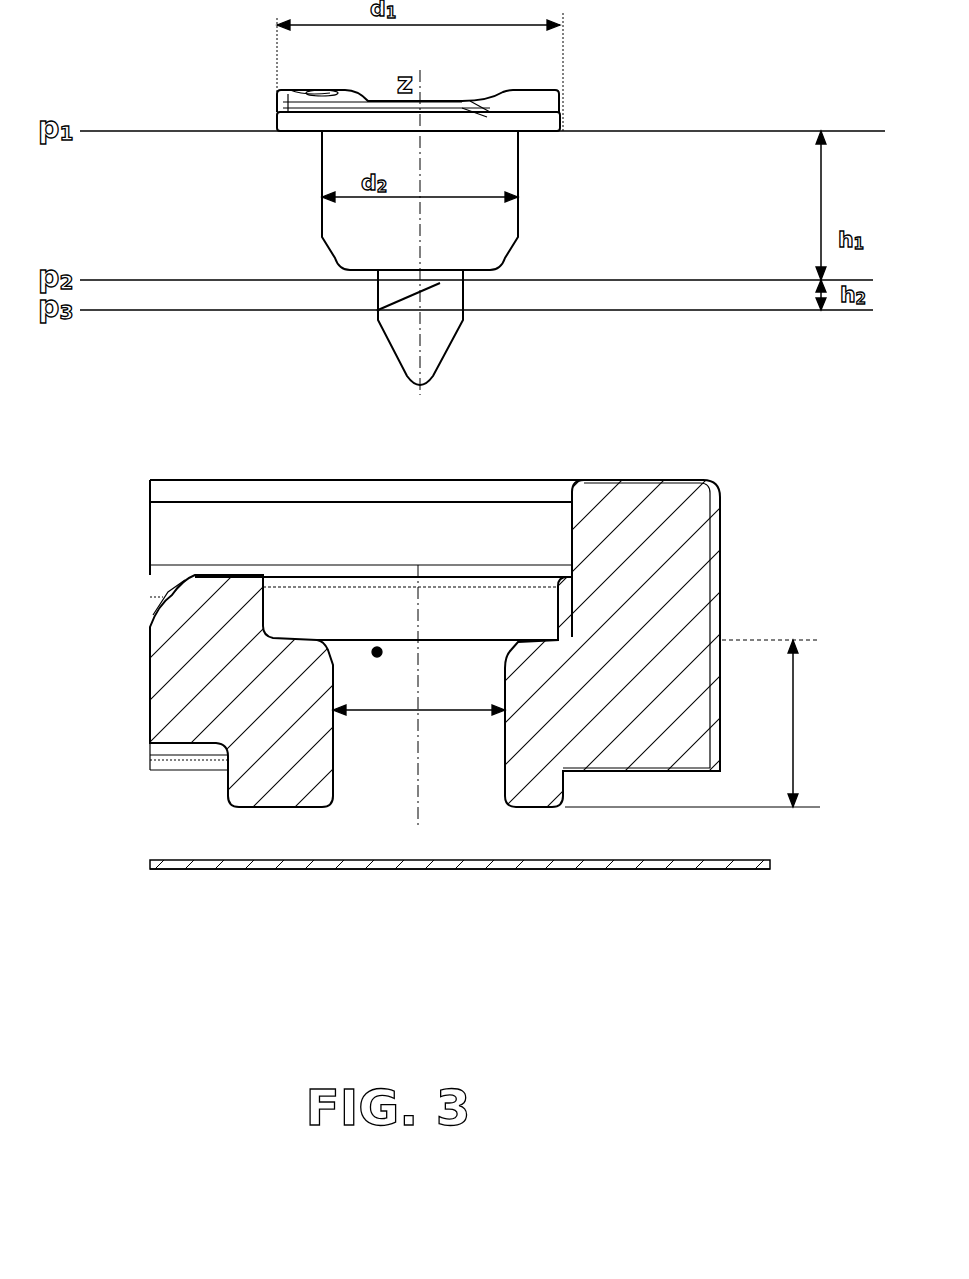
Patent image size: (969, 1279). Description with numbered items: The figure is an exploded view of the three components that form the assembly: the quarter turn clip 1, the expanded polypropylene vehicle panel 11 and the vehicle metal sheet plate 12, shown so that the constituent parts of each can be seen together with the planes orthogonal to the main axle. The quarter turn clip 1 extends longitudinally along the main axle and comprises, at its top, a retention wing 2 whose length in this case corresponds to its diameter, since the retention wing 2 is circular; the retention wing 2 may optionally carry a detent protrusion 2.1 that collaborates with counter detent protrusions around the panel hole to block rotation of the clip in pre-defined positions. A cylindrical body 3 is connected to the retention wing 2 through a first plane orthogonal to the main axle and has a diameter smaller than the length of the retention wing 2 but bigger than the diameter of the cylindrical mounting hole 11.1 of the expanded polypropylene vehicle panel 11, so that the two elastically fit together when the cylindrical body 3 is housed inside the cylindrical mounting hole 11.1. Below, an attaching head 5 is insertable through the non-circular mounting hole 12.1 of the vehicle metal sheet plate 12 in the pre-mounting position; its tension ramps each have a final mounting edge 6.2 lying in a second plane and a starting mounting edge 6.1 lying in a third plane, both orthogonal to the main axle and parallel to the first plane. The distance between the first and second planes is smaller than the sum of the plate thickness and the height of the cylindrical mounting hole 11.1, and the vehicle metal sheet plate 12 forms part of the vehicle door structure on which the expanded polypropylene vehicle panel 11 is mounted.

The quarter turn clip 1 is at (642, 92).
The retention wing 2 is at (295, 125).
The detent protrusion 2.1 is at (283, 95).
The cylindrical body 3 is at (520, 173).
The attaching head 5 is at (362, 340).
The starting mounting edge 6.1 is at (378, 310).
The final mounting edge 6.2 is at (440, 283).
The expanded polypropylene vehicle panel 11 is at (97, 555).
The cylindrical mounting hole 11.1 is at (375, 648).
The vehicle metal sheet plate 12 is at (135, 843).
The non-circular mounting hole 12.1 is at (430, 869).